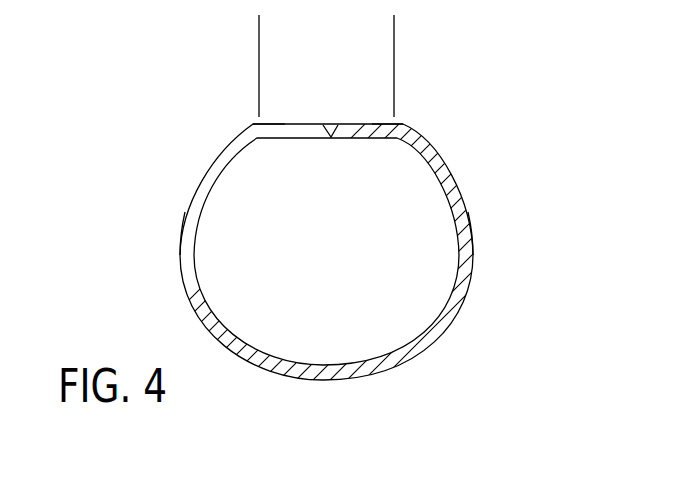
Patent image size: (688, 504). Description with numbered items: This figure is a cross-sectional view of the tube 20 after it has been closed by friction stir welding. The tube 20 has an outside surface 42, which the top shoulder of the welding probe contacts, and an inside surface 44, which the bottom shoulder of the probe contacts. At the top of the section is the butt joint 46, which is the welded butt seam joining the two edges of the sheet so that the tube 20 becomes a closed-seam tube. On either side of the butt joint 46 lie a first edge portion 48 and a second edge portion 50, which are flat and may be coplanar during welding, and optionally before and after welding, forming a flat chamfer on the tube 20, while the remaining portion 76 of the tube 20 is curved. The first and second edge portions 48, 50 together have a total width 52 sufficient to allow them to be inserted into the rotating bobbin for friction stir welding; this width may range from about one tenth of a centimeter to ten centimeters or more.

The tube 20 is at (378, 217).
The outside surface 42 is at (196, 175).
The inside surface 44 is at (215, 194).
The butt joint 46 is at (337, 139).
The first edge portion 48 is at (372, 122).
The second edge portion 50 is at (284, 122).
The total width 52 is at (259, 72).
The remaining portion 76 is at (180, 249).